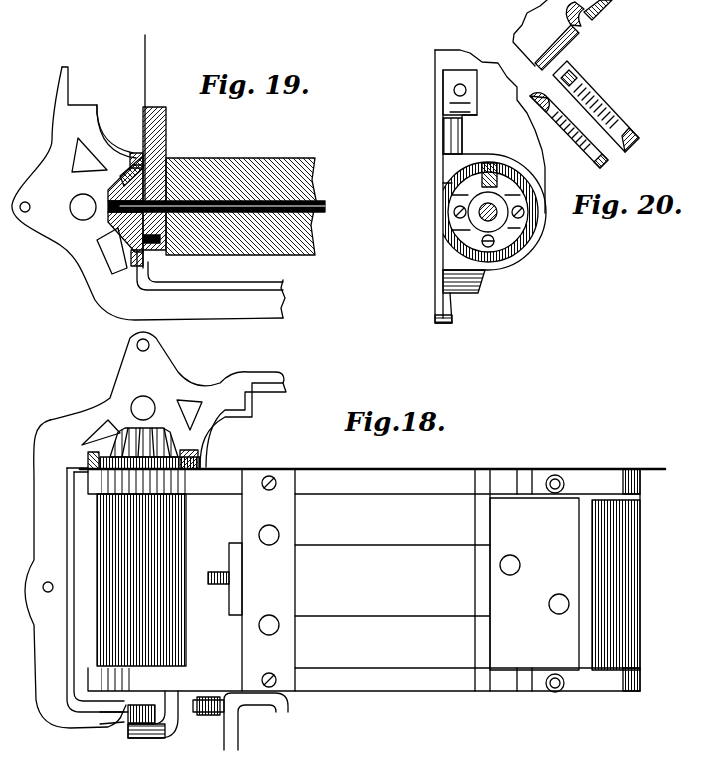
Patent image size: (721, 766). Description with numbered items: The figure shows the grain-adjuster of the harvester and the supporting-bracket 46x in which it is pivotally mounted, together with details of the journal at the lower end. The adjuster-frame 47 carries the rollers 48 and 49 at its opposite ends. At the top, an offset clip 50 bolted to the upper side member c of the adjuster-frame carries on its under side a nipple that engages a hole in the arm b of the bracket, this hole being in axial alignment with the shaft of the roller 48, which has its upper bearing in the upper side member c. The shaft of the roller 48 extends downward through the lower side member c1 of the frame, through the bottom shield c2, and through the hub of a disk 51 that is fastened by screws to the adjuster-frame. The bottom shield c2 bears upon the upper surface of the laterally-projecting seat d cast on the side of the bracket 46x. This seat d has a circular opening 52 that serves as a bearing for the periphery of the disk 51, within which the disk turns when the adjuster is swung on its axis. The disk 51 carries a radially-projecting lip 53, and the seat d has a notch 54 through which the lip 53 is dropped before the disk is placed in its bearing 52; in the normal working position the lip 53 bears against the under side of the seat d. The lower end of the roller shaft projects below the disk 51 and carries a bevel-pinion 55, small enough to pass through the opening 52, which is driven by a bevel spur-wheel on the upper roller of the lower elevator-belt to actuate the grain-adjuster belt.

In FIG. 19, the upper side member c is at (145, 78).
In FIG. 18, the upper side member c is at (165, 679).
In FIG. 19, the lower side member c1 is at (163, 178).
In FIG. 18, the lower side member c1 is at (372, 481).
In FIG. 20, the bottom shield c2 is at (468, 112).
In FIG. 18, the bottom shield c2 is at (258, 468).
In FIG. 20, the seat d is at (545, 232).
In FIG. 18, the seat d is at (138, 708).
In FIG. 18, the arm b is at (114, 728).
In FIG. 19, the supporting-bracket 46x is at (148, 193).
In FIG. 20, the supporting-bracket 46x is at (437, 155).
In FIG. 18, the supporting-bracket 46x is at (155, 530).
In FIG. 18, the adjuster-frame 47 is at (424, 580).
In FIG. 19, the roller 48 is at (216, 206).
In FIG. 18, the roller 48 is at (141, 580).
In FIG. 18, the roller 49 is at (616, 585).
In FIG. 18, the clip 50 is at (196, 713).
In FIG. 19, the disk 51 is at (168, 256).
In FIG. 20, the disk 51 is at (528, 240).
In FIG. 18, the disk 51 is at (152, 470).
In FIG. 19, the circular opening 52 is at (146, 163).
In FIG. 20, the circular opening 52 is at (560, 94).
In FIG. 18, the circular opening 52 is at (94, 478).
In FIG. 19, the radially-projecting lip 53 is at (128, 165).
In FIG. 20, the radially-projecting lip 53 is at (488, 160).
In FIG. 18, the radially-projecting lip 53 is at (189, 452).
In FIG. 20, the notch 54 is at (443, 183).
In FIG. 19, the bevel-pinion 55 is at (108, 190).
In FIG. 18, the bevel-pinion 55 is at (170, 432).